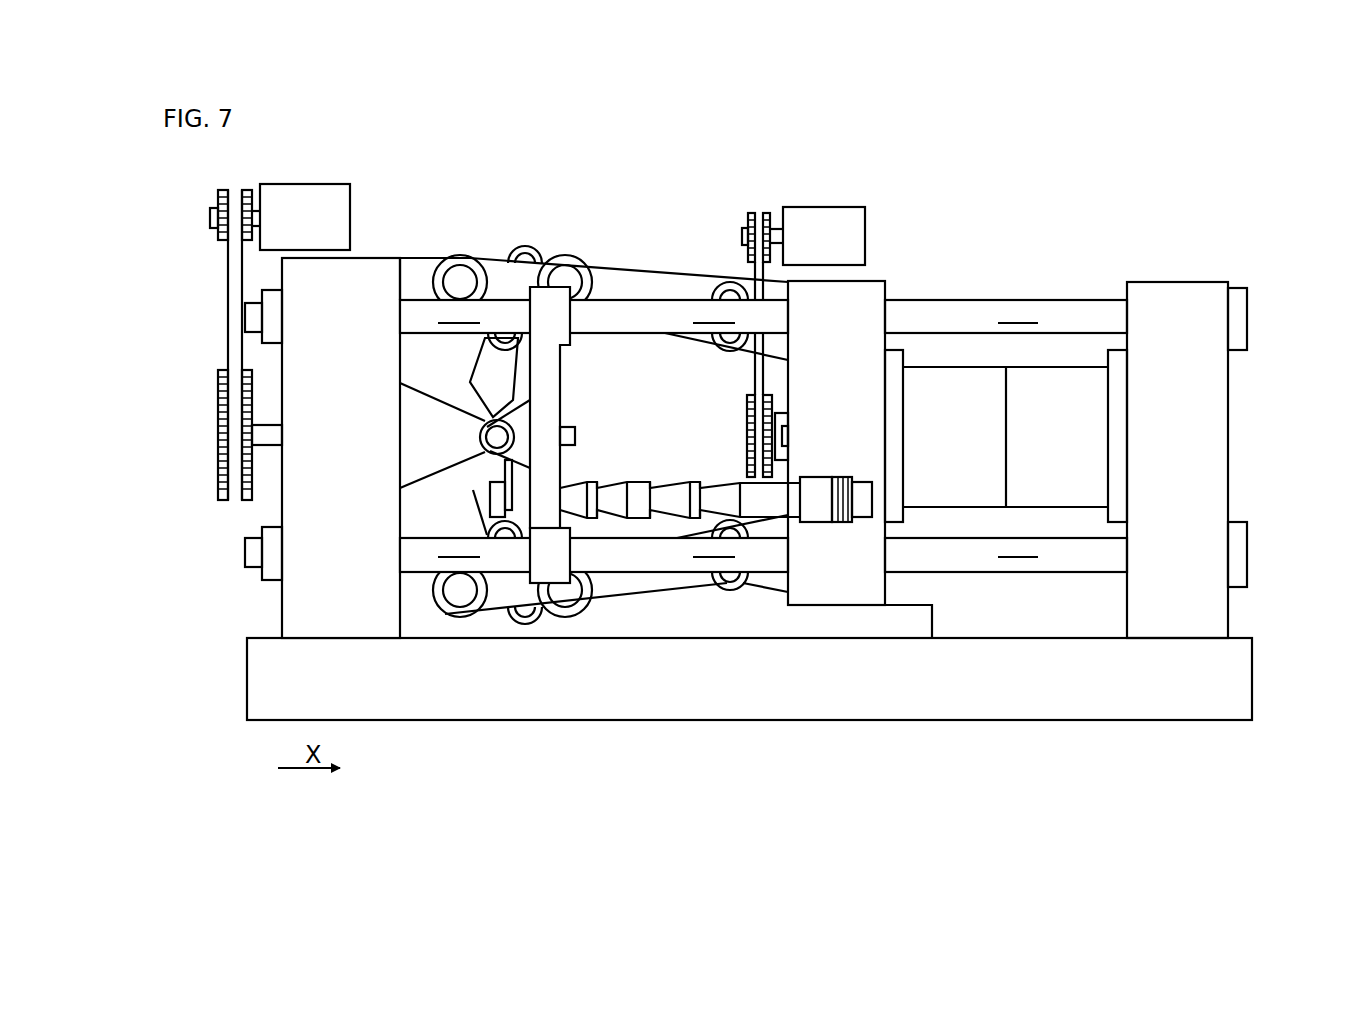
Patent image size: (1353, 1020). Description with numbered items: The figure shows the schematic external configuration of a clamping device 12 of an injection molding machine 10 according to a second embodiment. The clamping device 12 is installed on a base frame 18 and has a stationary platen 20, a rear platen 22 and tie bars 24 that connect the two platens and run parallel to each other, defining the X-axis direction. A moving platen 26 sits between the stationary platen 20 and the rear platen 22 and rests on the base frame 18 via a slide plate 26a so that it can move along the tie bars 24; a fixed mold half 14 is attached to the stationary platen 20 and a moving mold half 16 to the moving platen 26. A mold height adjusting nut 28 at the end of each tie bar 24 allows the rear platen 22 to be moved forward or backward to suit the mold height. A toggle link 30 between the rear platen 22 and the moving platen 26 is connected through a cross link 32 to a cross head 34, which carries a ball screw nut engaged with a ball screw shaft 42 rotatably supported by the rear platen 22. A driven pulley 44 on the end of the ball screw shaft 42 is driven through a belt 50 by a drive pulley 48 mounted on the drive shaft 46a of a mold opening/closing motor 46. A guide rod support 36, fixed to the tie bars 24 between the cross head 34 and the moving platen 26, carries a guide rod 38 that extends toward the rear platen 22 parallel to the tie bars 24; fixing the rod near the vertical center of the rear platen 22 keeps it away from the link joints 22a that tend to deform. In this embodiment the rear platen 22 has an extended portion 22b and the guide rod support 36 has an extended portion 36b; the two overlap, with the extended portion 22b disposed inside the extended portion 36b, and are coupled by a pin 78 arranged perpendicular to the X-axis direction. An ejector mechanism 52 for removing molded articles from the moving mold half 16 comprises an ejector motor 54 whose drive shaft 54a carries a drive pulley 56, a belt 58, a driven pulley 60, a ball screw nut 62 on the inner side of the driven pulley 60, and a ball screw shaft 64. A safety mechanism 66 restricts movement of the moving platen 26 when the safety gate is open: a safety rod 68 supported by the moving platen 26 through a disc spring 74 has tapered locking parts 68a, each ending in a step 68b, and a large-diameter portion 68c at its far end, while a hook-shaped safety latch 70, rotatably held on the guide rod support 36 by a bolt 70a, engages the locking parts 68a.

The injection molding machine 10 is at (588, 139).
The clamping device 12 is at (1066, 415).
The fixed mold half 14 is at (1068, 490).
The moving mold half 16 is at (970, 490).
The base frame 18 is at (1186, 693).
The stationary platen 20 is at (1178, 290).
The rear platen 22 is at (383, 420).
The link joints 22a is at (413, 268).
The extended portion 22b is at (410, 416).
The tie bars 24 is at (1003, 300).
The moving platen 26 is at (860, 470).
The slide plate 26a is at (858, 623).
The mold height adjusting nut 28 is at (270, 575).
The toggle link 30 is at (640, 283).
The cross link 32 is at (531, 245).
The cross head 34 is at (492, 375).
The guide rod support 36 is at (556, 295).
The extended portion 36b is at (528, 412).
The guide rod 38 is at (576, 432).
The ball screw shaft 42 is at (258, 432).
The driven pulley 44 is at (218, 385).
The mold opening/closing motor 46 is at (300, 197).
The drive shaft 46a is at (210, 218).
The drive pulley 48 is at (218, 190).
The belt 50 is at (240, 276).
The ejector mechanism 52 is at (799, 307).
The ejector motor 54 is at (855, 218).
The drive shaft 54a is at (742, 236).
The drive pulley 56 is at (757, 212).
The belt 58 is at (752, 368).
The driven pulley 60 is at (745, 413).
The ball screw nut 62 is at (779, 418).
The ball screw shaft 64 is at (786, 436).
The safety mechanism 66 is at (645, 485).
The safety rod 68 is at (625, 503).
The locking parts 68a is at (693, 490).
The step 68b is at (657, 485).
The large-diameter portion 68c is at (490, 500).
The safety latch 70 is at (494, 521).
The bolt 70a is at (500, 470).
The disc spring 74 is at (838, 505).
The pin 78 is at (480, 437).